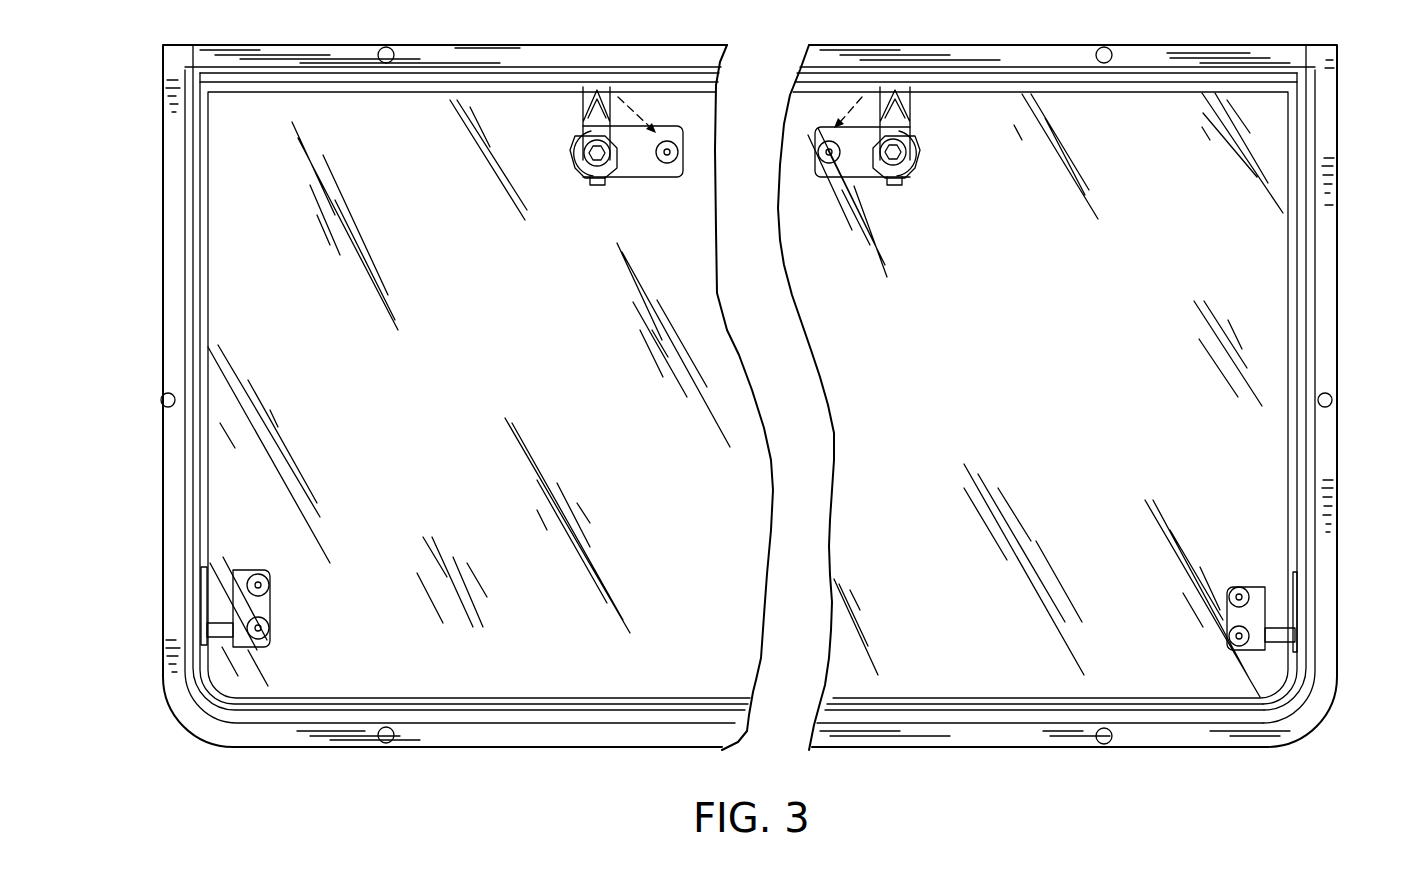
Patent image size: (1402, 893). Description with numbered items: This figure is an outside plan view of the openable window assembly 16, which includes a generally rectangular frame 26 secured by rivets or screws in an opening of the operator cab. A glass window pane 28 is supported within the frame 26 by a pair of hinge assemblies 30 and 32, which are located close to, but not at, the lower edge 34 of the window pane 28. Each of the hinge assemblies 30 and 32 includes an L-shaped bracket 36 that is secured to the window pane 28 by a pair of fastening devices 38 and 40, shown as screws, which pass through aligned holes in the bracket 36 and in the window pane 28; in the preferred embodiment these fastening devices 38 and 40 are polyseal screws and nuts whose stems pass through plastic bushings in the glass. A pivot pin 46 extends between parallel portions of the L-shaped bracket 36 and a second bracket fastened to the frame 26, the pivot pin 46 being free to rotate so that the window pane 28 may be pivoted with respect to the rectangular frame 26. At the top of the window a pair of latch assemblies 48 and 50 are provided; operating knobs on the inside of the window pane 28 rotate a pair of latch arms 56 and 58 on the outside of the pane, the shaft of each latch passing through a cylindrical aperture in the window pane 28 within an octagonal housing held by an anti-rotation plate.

The openable window assembly 16 is at (1166, 38).
The frame 26 is at (1331, 229).
The window pane 28 is at (1280, 375).
The hinge assembly 30 is at (1250, 663).
The hinge assembly 32 is at (252, 661).
The lower edge 34 is at (1003, 700).
The L-shaped bracket 36 is at (245, 572).
The fastening device 38 is at (267, 630).
The fastening device 40 is at (266, 584).
The pivot pin 46 is at (217, 623).
The latch assembly 48 is at (925, 185).
The latch assembly 50 is at (567, 173).
The latch arm 56 is at (903, 113).
The latch arm 58 is at (600, 113).